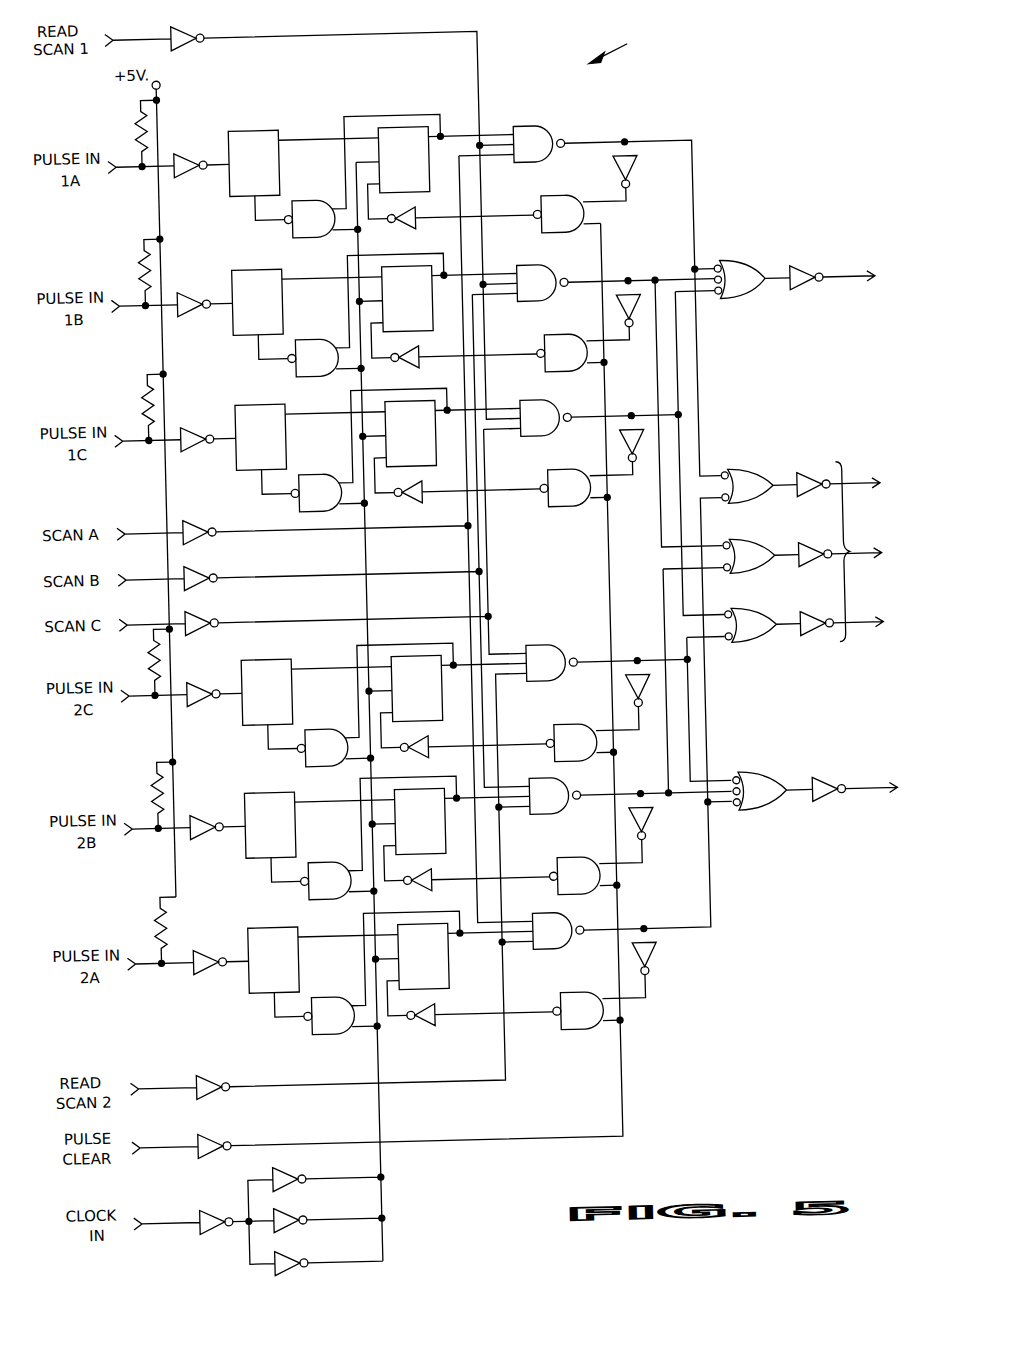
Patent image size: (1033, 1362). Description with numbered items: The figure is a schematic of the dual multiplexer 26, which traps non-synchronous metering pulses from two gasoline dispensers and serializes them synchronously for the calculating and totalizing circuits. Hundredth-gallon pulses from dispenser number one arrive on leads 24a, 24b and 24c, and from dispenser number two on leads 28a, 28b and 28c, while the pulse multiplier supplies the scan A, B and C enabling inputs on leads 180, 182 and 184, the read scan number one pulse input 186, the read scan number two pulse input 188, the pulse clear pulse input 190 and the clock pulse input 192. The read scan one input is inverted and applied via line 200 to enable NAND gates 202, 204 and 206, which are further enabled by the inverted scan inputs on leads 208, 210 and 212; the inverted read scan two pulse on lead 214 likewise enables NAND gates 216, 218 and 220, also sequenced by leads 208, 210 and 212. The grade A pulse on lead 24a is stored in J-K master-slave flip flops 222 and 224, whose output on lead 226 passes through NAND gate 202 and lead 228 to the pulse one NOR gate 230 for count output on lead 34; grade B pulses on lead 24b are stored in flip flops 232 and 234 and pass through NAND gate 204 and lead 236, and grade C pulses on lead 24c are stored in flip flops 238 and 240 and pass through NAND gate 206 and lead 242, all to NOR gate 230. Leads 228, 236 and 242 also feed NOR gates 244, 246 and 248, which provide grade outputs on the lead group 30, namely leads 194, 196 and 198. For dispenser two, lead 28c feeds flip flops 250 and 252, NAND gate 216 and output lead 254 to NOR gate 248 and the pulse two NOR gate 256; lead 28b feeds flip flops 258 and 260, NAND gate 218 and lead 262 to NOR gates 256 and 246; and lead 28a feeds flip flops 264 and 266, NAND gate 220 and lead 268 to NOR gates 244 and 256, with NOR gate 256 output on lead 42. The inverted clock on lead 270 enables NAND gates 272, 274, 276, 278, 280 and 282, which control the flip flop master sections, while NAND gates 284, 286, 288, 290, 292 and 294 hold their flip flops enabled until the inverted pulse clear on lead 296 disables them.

The read scan No. 1 pulse input 186 is at (150, 31).
The line 200 is at (494, 67).
The dual multiplexer 26 is at (621, 45).
The J-K master-slave flip flop 222 is at (270, 125).
The J-K master-slave flip flop 224 is at (398, 125).
The lead 226 is at (516, 130).
The NAND gate 202 is at (558, 129).
The lead 228 is at (706, 147).
The lead 208 is at (484, 203).
The NAND gate 284 is at (586, 225).
The NAND gate 272 is at (337, 224).
The lead 24a is at (130, 170).
The J-K flip flop 232 is at (278, 274).
The J-K flip flop 234 is at (408, 274).
The NAND gate 204 is at (541, 272).
The lead 236 is at (637, 283).
The pulse 1 NOR gate 230 is at (745, 269).
The lead 34 is at (852, 284).
The lead 210 is at (481, 342).
The NAND gate 274 is at (337, 363).
The NAND gate 286 is at (586, 364).
The lead 24b is at (130, 309).
The J-K flip flop 238 is at (259, 400).
The J-K flip flop 240 is at (413, 400).
The NAND gate 206 is at (537, 403).
The lead 242 is at (636, 429).
The lead 212 is at (488, 478).
The lead 24c is at (132, 444).
The NAND gate 276 is at (337, 498).
The NAND gate 288 is at (586, 499).
The lead 180 is at (164, 526).
The lead 182 is at (167, 572).
The lead 184 is at (164, 617).
The lead 214 is at (494, 727).
The lead 296 is at (608, 544).
The NOR gate 244 is at (740, 476).
The grade pulse output 194 is at (852, 492).
The NOR gate 246 is at (744, 555).
The grade pulse output 196 is at (877, 560).
The NOR gate 248 is at (744, 625).
The grade pulse output 198 is at (859, 629).
The lead group 30 is at (859, 551).
The J-K flip flop 250 is at (284, 654).
The J-K flip flop 252 is at (406, 654).
The NAND gate 216 is at (541, 648).
The NAND gate 278 is at (337, 753).
The NAND gate 290 is at (586, 754).
The output lead 254 is at (688, 714).
The lead 262 is at (666, 738).
The output lead 268 is at (706, 667).
The pulse 2 NOR gate 256 is at (734, 785).
The lead 42 is at (845, 800).
The lead 28c is at (130, 699).
The J-K flip flop 258 is at (266, 786).
The J-K flip flop 260 is at (413, 786).
The NAND gate 218 is at (548, 787).
The NAND gate 280 is at (337, 886).
The NAND gate 292 is at (586, 887).
The lead 28b is at (130, 832).
The flip flop 264 is at (263, 920).
The flip flop 266 is at (418, 922).
The NAND gate 220 is at (545, 923).
The NAND gate 282 is at (337, 1021).
The NAND gate 294 is at (586, 1022).
The lead 28a is at (133, 967).
The read scan No. 2 pulse input 188 is at (160, 1080).
The pulse clear pulse input 190 is at (158, 1139).
The clock pulse input 192 is at (158, 1215).
The lead 270 is at (369, 1165).